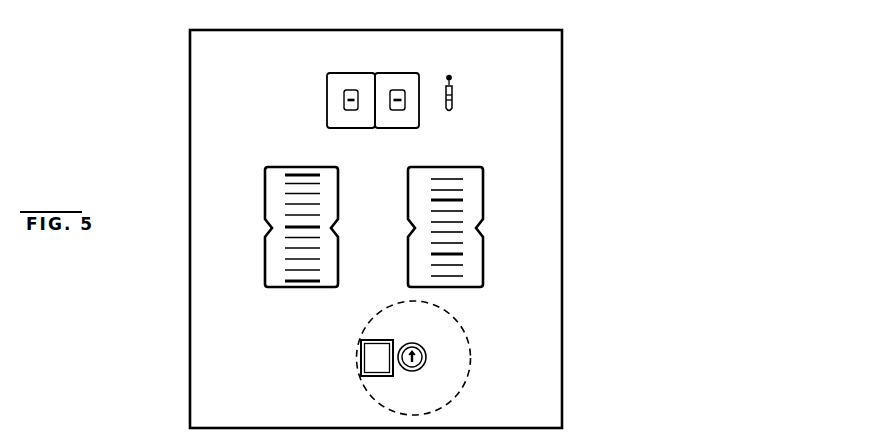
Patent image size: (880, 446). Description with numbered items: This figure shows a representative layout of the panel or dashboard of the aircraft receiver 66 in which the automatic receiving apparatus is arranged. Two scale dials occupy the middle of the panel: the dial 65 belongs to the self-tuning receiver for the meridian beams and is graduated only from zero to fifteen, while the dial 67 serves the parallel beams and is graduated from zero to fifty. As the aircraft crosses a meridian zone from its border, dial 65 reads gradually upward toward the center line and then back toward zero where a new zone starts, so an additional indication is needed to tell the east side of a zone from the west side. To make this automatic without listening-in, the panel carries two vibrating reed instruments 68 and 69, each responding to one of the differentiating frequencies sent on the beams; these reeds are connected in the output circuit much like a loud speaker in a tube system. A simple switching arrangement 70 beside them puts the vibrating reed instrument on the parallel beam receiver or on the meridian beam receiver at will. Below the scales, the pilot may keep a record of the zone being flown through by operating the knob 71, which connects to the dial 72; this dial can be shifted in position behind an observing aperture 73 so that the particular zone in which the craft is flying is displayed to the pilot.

The dial 65 is at (275, 204).
The receiver 66 is at (211, 77).
The dial 67 is at (470, 214).
The vibrating reed instrument 68 is at (335, 83).
The vibrating reed instrument 69 is at (408, 82).
The switching arrangement 70 is at (459, 95).
The knob 71 is at (420, 368).
The dial 72 is at (377, 400).
The observing aperture 73 is at (361, 345).